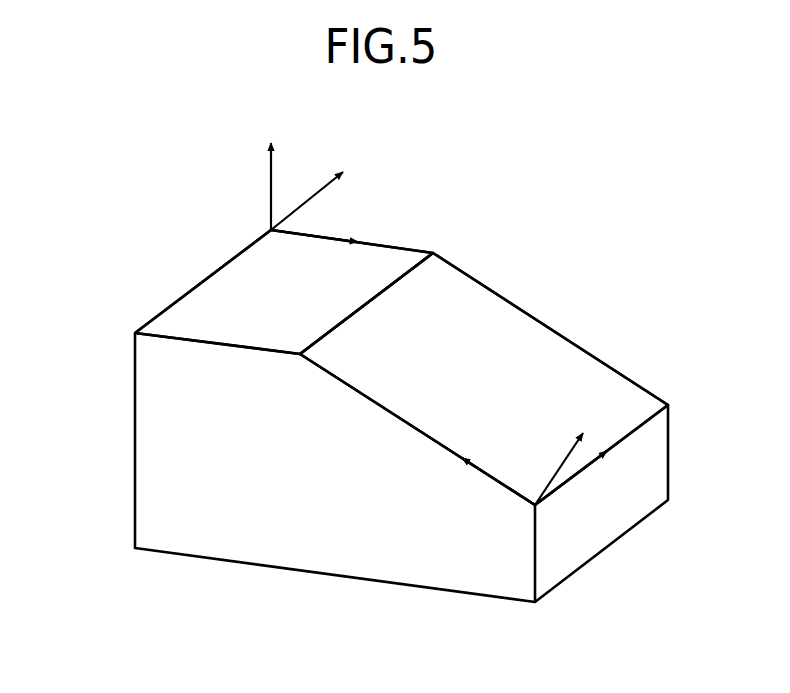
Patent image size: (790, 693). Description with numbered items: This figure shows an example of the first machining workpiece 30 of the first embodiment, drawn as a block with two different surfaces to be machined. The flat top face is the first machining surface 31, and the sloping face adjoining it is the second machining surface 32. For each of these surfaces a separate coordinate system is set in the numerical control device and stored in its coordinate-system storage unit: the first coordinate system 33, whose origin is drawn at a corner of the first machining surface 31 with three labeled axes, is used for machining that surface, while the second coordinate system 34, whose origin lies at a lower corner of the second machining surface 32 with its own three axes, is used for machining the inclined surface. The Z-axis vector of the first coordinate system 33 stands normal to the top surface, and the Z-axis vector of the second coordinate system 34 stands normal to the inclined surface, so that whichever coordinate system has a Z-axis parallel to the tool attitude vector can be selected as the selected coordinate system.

The first machining workpiece 30 is at (135, 378).
The first machining surface 31 is at (227, 287).
The second machining surface 32 is at (497, 313).
The first coordinate system 33 is at (267, 226).
The second coordinate system 34 is at (537, 511).